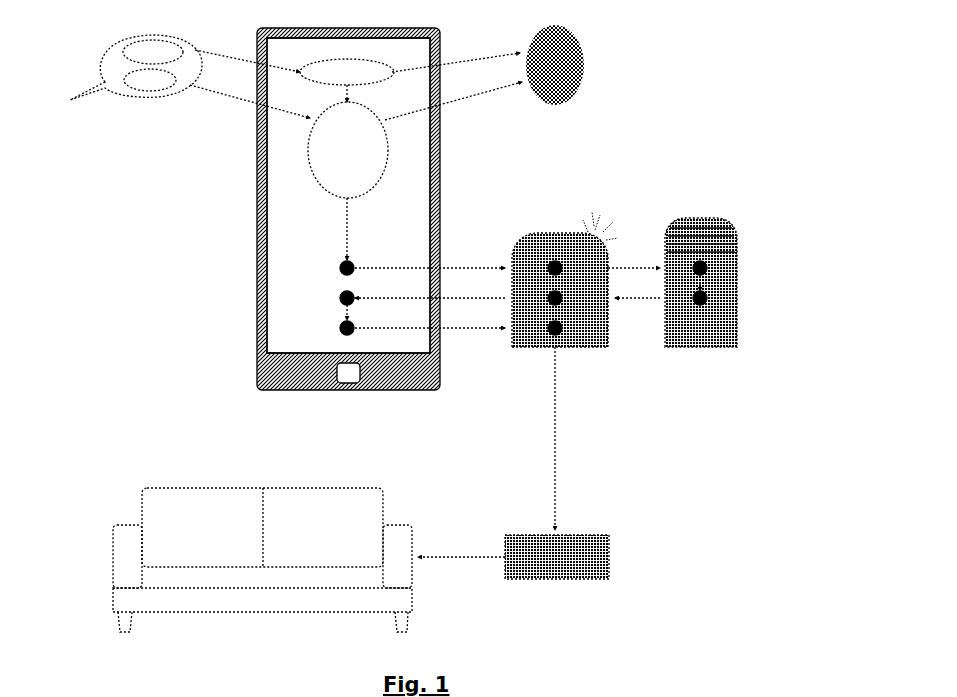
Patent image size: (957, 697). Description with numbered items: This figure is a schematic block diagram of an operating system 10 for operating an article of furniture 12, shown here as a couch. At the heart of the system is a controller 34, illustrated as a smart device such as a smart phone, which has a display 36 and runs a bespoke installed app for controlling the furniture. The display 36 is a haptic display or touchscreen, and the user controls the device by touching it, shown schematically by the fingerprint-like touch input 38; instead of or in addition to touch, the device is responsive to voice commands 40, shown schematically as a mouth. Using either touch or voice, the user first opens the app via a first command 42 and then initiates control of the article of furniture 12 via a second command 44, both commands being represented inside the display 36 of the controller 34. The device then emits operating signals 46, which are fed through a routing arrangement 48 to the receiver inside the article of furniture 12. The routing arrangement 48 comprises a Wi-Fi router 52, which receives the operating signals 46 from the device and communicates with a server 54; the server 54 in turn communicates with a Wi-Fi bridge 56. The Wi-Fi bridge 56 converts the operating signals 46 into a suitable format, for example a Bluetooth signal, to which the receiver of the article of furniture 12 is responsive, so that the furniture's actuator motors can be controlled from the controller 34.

The operating system 10 is at (685, 95).
The article of furniture 12 is at (410, 484).
The controller 34 is at (452, 184).
The display 36 is at (272, 205).
The touch input 38 is at (580, 45).
The voice commands 40 is at (105, 52).
The first command 42 is at (383, 67).
The second command 44 is at (390, 150).
The operating signals 46 is at (487, 265).
The routing arrangement 48 is at (630, 228).
The Wi-Fi router 52 is at (548, 237).
The server 54 is at (710, 220).
The Wi-Fi bridge 56 is at (570, 535).